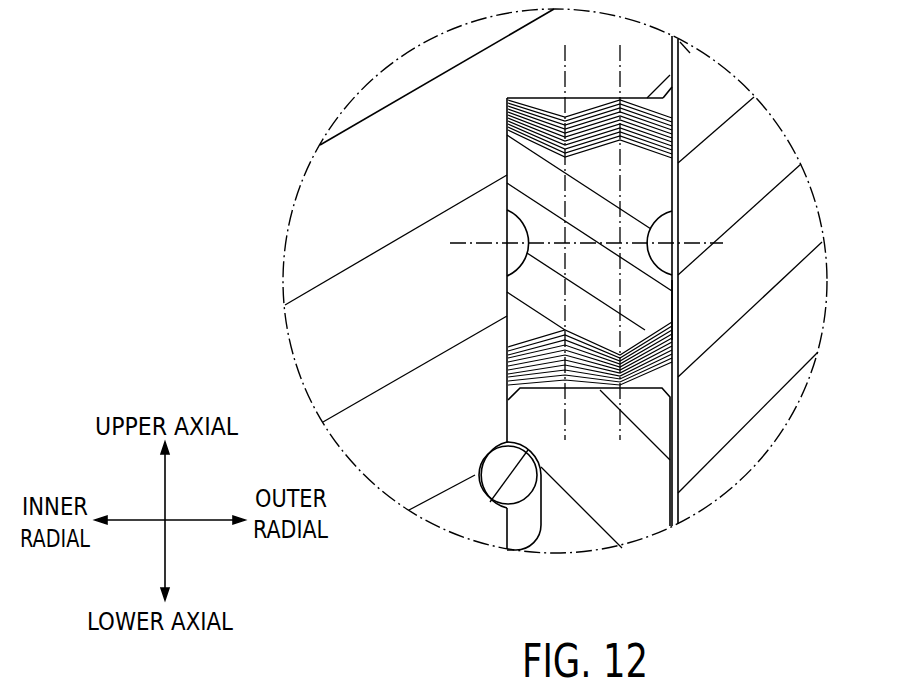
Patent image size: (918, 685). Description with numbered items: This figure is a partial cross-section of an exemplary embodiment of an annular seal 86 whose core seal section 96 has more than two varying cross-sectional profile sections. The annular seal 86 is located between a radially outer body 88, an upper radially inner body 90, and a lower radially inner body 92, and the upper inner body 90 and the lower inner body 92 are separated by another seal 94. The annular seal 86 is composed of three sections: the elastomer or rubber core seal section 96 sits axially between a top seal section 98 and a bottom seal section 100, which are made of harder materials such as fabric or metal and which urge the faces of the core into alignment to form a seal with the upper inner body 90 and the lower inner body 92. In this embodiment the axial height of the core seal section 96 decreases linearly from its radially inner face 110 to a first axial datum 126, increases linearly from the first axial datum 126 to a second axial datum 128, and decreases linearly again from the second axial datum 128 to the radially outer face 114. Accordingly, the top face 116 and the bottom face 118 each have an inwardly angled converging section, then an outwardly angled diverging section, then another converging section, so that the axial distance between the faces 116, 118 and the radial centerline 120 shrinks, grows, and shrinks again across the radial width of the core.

The annular seal 86 is at (698, 172).
The radially outer body 88 is at (750, 443).
The upper radially inner body 90 is at (432, 62).
The lower radially inner body 92 is at (635, 505).
The seal 94 is at (509, 487).
The core seal section 96 is at (645, 192).
The top seal section 98 is at (672, 127).
The bottom seal section 100 is at (657, 348).
The radially inner face 110 is at (507, 199).
The radially outer face 114 is at (678, 313).
The top face 116 is at (507, 123).
The bottom face 118 is at (507, 372).
The radial centerline 120 is at (484, 244).
The first axial datum 126 is at (563, 68).
The second axial datum 128 is at (621, 80).